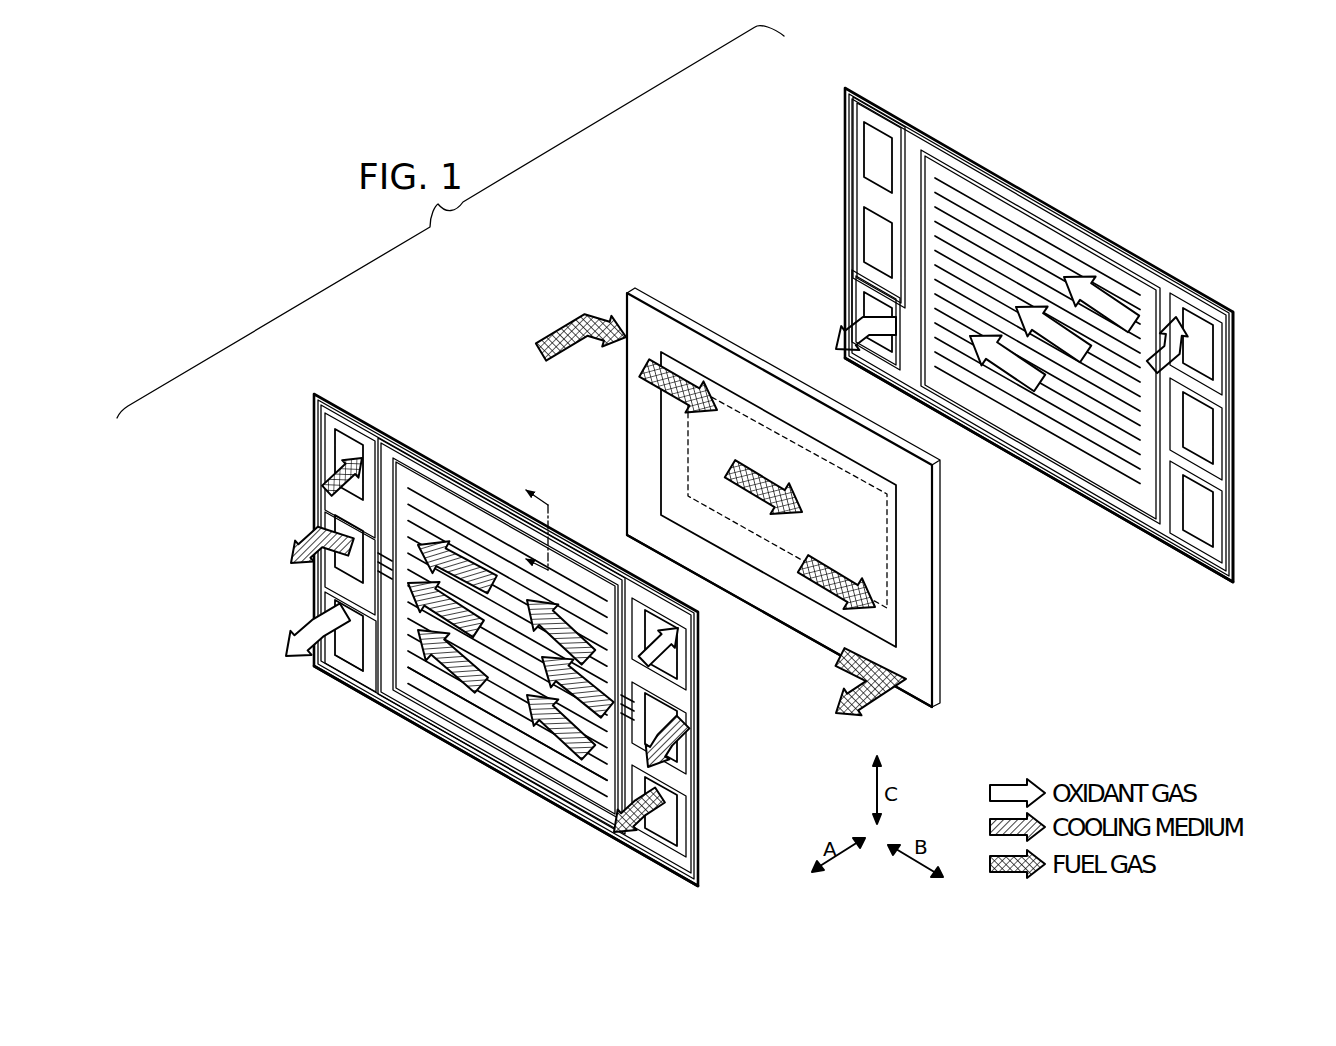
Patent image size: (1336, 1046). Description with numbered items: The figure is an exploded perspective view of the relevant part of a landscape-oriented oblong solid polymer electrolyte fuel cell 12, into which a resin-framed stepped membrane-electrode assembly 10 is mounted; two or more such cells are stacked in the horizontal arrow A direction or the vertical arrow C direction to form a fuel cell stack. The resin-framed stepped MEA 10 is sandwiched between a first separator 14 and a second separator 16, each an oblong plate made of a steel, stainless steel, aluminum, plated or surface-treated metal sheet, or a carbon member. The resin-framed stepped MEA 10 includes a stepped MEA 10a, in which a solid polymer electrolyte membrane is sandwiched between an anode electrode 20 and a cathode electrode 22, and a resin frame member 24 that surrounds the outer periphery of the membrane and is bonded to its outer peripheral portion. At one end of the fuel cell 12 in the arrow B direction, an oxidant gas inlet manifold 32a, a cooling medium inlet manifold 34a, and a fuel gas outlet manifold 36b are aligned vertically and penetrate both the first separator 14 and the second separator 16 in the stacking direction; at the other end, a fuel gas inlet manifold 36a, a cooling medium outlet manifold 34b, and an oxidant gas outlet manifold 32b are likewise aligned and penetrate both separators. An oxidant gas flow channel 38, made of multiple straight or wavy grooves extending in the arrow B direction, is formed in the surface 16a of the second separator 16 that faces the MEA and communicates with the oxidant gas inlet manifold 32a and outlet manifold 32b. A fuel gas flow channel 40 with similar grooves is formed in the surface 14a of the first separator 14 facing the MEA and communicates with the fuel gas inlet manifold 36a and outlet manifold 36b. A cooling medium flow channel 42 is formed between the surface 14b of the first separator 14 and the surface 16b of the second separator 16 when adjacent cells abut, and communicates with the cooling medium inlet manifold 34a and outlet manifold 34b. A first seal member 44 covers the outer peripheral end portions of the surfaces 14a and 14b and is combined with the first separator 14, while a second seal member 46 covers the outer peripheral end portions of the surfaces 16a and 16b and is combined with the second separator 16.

The resin-framed stepped membrane-electrode assembly 10 is at (620, 290).
The stepped MEA 10a is at (757, 554).
The solid polymer electrolyte fuel cell 12 is at (570, 213).
The first separator 14 is at (326, 388).
The surface of the first separator 14a is at (322, 676).
The surface of the first separator 14b is at (351, 672).
The second separator 16 is at (840, 101).
The surface of the second separator 16a is at (1193, 548).
The surface of the second separator 16b is at (1210, 558).
The anode electrode 20 is at (680, 473).
The cathode electrode 22 is at (753, 435).
The resin frame member 24 is at (683, 308).
The oxidant gas inlet manifold 32a is at (668, 667).
The oxidant gas outlet manifold 32b is at (347, 613).
The cooling medium inlet manifold 34a is at (668, 712).
The cooling medium outlet manifold 34b is at (350, 527).
The fuel gas inlet manifold 36a is at (352, 458).
The fuel gas outlet manifold 36b is at (668, 806).
The oxidant gas flow channel 38 is at (1005, 240).
The fuel gas flow channel 40 is at (465, 520).
The cooling medium flow channel 42 is at (442, 690).
The first seal member 44 is at (416, 457).
The second seal member 46 is at (858, 270).